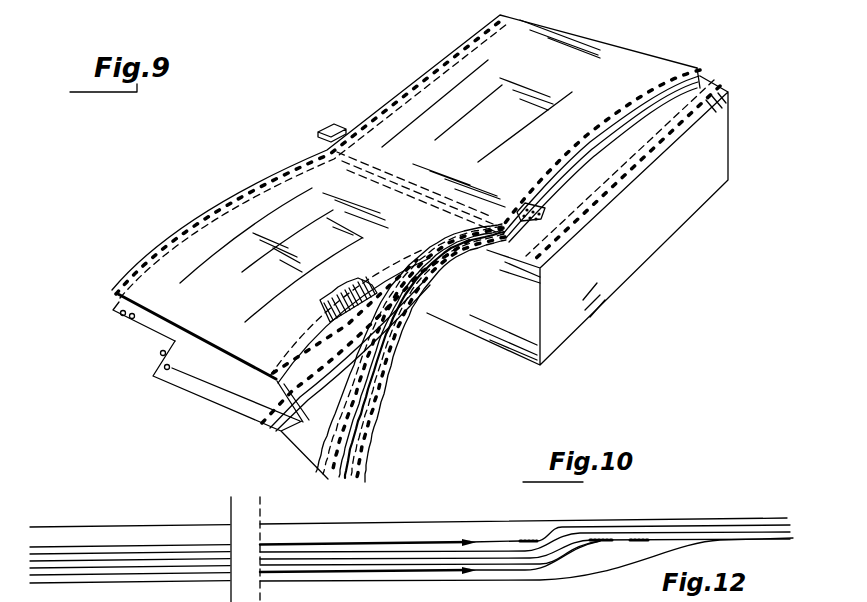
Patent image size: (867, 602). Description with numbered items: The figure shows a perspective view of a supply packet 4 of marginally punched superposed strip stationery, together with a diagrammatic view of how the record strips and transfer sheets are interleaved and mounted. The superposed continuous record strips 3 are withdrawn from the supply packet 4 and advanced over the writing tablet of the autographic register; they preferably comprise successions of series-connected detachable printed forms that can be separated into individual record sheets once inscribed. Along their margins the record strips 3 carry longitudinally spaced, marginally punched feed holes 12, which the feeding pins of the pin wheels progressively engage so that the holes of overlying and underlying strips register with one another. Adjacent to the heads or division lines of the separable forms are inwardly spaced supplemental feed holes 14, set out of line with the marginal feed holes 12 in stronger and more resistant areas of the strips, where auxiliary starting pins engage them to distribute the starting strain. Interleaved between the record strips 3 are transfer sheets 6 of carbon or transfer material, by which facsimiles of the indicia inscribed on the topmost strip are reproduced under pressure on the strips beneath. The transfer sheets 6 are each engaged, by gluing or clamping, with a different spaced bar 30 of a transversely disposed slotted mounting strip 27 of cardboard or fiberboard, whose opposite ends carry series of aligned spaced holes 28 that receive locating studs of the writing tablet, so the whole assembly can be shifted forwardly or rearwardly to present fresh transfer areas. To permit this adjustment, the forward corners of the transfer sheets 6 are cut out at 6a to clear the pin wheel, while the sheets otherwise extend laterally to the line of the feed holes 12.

In FIG. 9, the record strips 3 is at (157, 260).
In FIG. 10, the record strips 3 is at (143, 583).
In FIG. 9, the supply packet 4 is at (613, 270).
In FIG. 9, the transfer sheets 6 is at (140, 330).
In FIG. 10, the transfer sheets 6 is at (86, 578).
In FIG. 9, the cut-out corner 6a is at (125, 280).
In FIG. 9, the feed holes 12 is at (402, 88).
In FIG. 9, the supplemental feed holes 14 is at (327, 155).
In FIG. 9, the slotted mounting strip 27 is at (547, 212).
In FIG. 10, the slotted mounting strip 27 is at (480, 540).
In FIG. 9, the spaced holes 28 is at (525, 222).
In FIG. 10, the spaced bar 30 is at (600, 537).